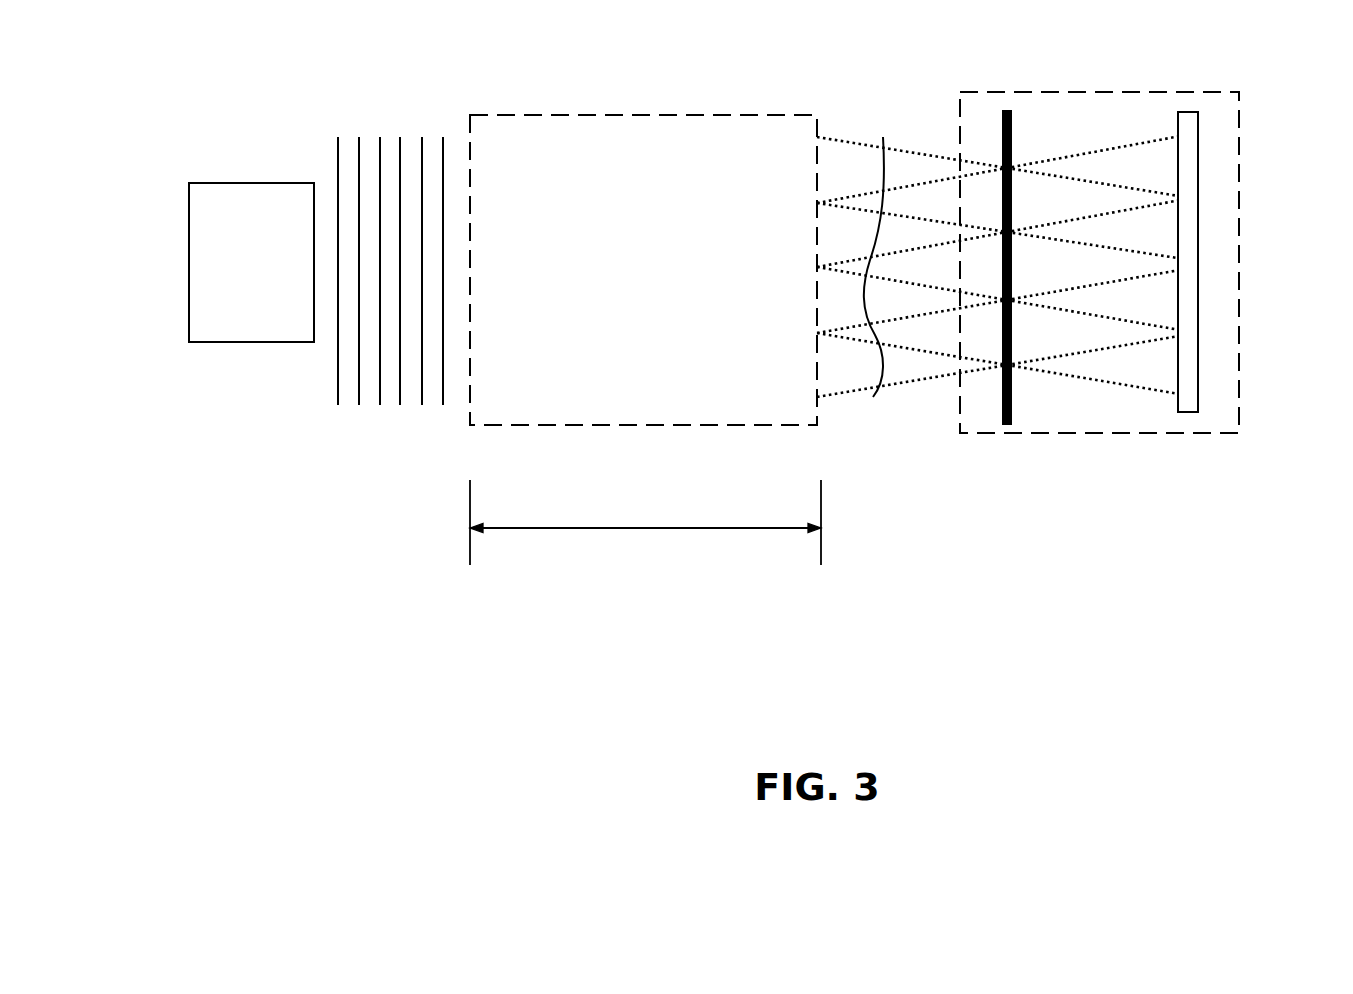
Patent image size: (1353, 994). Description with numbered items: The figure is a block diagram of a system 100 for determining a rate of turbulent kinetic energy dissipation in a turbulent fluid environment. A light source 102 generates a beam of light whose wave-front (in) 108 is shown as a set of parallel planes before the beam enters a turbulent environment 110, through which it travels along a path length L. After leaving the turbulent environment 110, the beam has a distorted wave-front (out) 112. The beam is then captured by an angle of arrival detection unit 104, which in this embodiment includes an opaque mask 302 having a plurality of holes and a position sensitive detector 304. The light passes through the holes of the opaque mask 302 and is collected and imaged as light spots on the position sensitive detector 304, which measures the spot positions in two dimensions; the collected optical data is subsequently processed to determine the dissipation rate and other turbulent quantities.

The system 100 is at (1105, 600).
The light source 102 is at (252, 182).
The angle of arrival detection unit 104 is at (1237, 260).
The wave-front (in) 108 is at (425, 113).
The turbulent environment 110 is at (642, 113).
The wave-front (out) 112 is at (890, 137).
The opaque mask 302 is at (1010, 110).
The position sensitive detector (PSD) 304 is at (1187, 112).